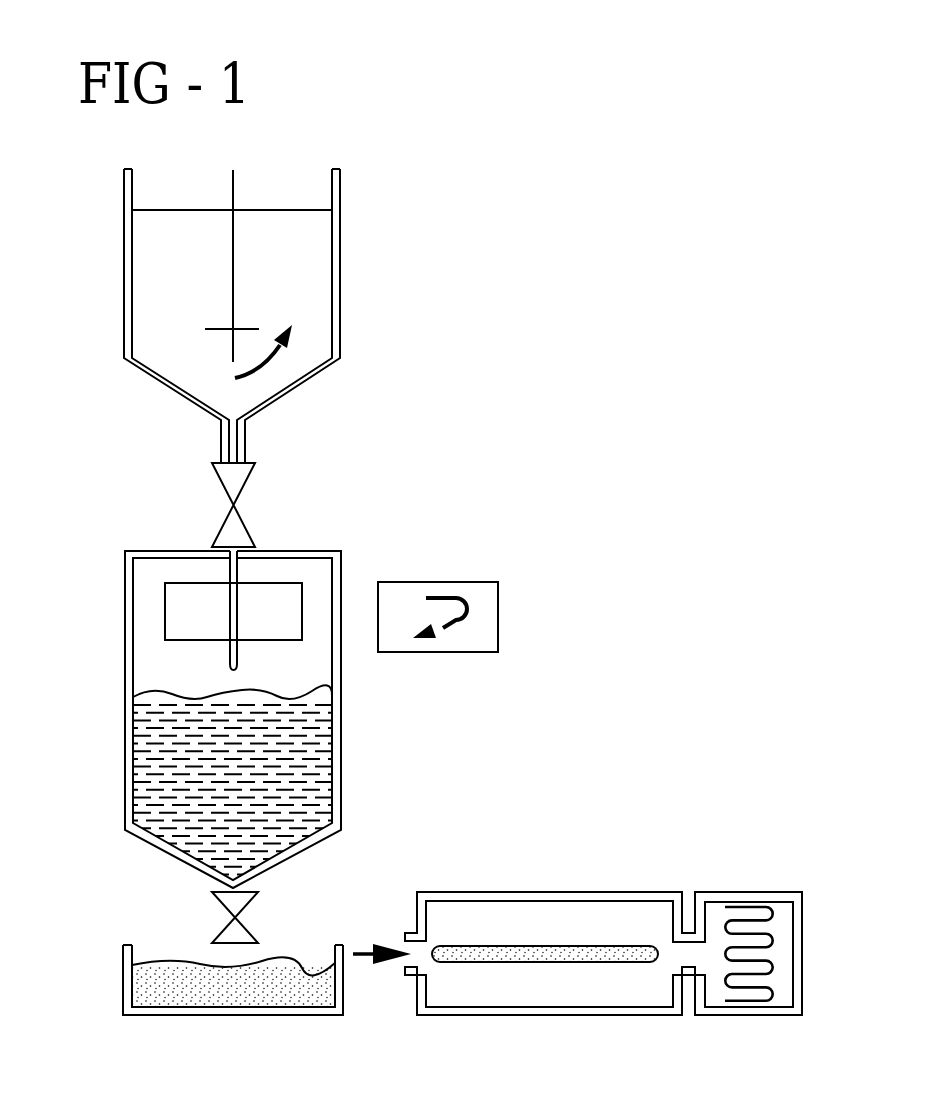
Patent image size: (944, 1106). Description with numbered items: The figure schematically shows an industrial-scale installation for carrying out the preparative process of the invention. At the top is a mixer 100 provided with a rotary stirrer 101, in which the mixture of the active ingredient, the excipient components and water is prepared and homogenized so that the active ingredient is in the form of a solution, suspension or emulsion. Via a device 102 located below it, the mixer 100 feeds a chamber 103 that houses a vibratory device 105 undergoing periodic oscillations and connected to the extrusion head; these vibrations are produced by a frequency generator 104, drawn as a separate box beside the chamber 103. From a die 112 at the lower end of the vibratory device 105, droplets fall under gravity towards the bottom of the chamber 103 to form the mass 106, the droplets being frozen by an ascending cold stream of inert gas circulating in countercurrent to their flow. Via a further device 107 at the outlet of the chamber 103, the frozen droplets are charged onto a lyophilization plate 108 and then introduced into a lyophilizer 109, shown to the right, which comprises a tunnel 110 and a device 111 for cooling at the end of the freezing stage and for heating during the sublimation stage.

The mixer 100 is at (350, 262).
The rotary stirrer 101 is at (258, 320).
The device 102 is at (247, 487).
The chamber 103 is at (355, 748).
The frequency generator 104 is at (507, 612).
The vibratory device 105 is at (302, 601).
The mass 106 is at (342, 804).
The device 107 is at (220, 906).
The lyophilization plate 108 is at (212, 1026).
The lyophilizer 109 is at (617, 882).
The tunnel 110 is at (560, 963).
The device for cooling and heating 111 is at (773, 913).
The die 112 is at (230, 658).